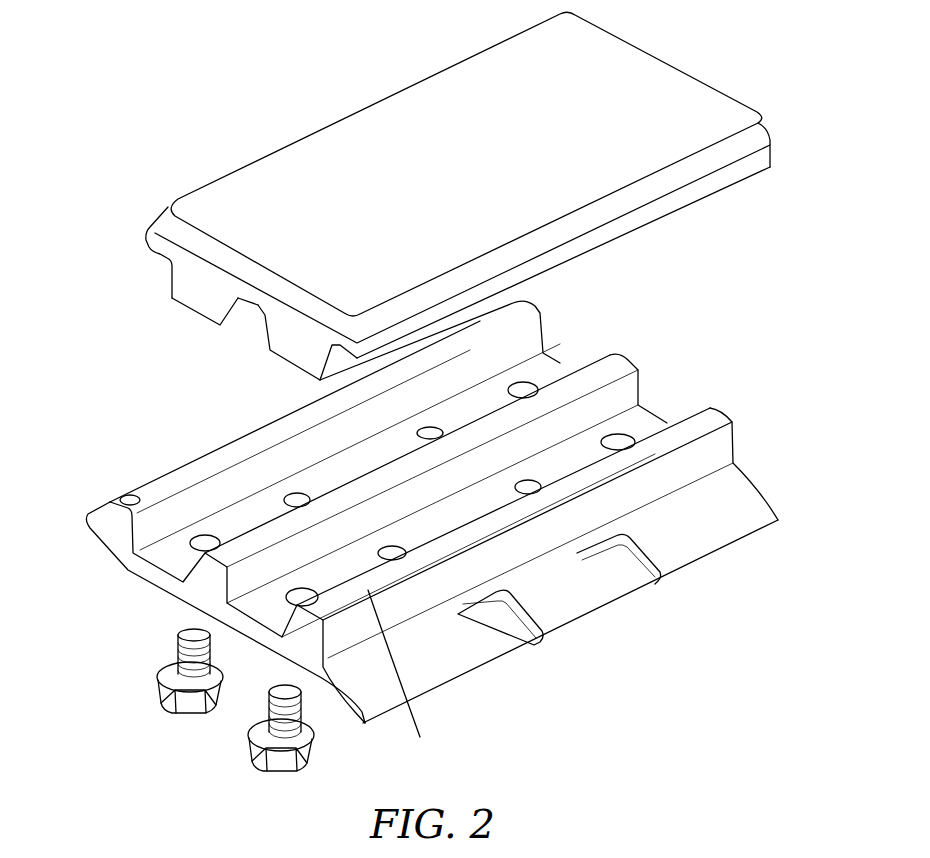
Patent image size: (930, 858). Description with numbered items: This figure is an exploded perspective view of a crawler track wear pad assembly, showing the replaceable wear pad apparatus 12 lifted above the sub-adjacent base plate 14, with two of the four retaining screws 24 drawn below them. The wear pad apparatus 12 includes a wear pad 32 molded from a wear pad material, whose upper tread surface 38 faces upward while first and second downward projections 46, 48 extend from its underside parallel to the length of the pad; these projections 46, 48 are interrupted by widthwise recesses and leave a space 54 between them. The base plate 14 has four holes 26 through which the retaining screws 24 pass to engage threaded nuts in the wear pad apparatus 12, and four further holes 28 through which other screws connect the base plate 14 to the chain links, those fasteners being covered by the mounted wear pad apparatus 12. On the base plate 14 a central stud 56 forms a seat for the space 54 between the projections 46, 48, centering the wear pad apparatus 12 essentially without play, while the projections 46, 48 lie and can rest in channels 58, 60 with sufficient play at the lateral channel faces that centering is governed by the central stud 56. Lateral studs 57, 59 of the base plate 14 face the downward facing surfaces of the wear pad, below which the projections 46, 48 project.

The wear pad apparatus 12 is at (460, 207).
The base plate 14 is at (417, 517).
The retaining screws 24 is at (175, 648).
The holes 26 is at (540, 383).
The holes 28 is at (427, 431).
The wear pad 32 is at (441, 68).
The upper tread surface 38 is at (317, 227).
The first downward projection 46 is at (182, 300).
The second downward projection 48 is at (272, 352).
The space 54 is at (251, 329).
The central stud 56 is at (205, 541).
The stud 57 is at (130, 495).
The channel 58 is at (555, 333).
The stud 59 is at (399, 678).
The channel 60 is at (667, 406).